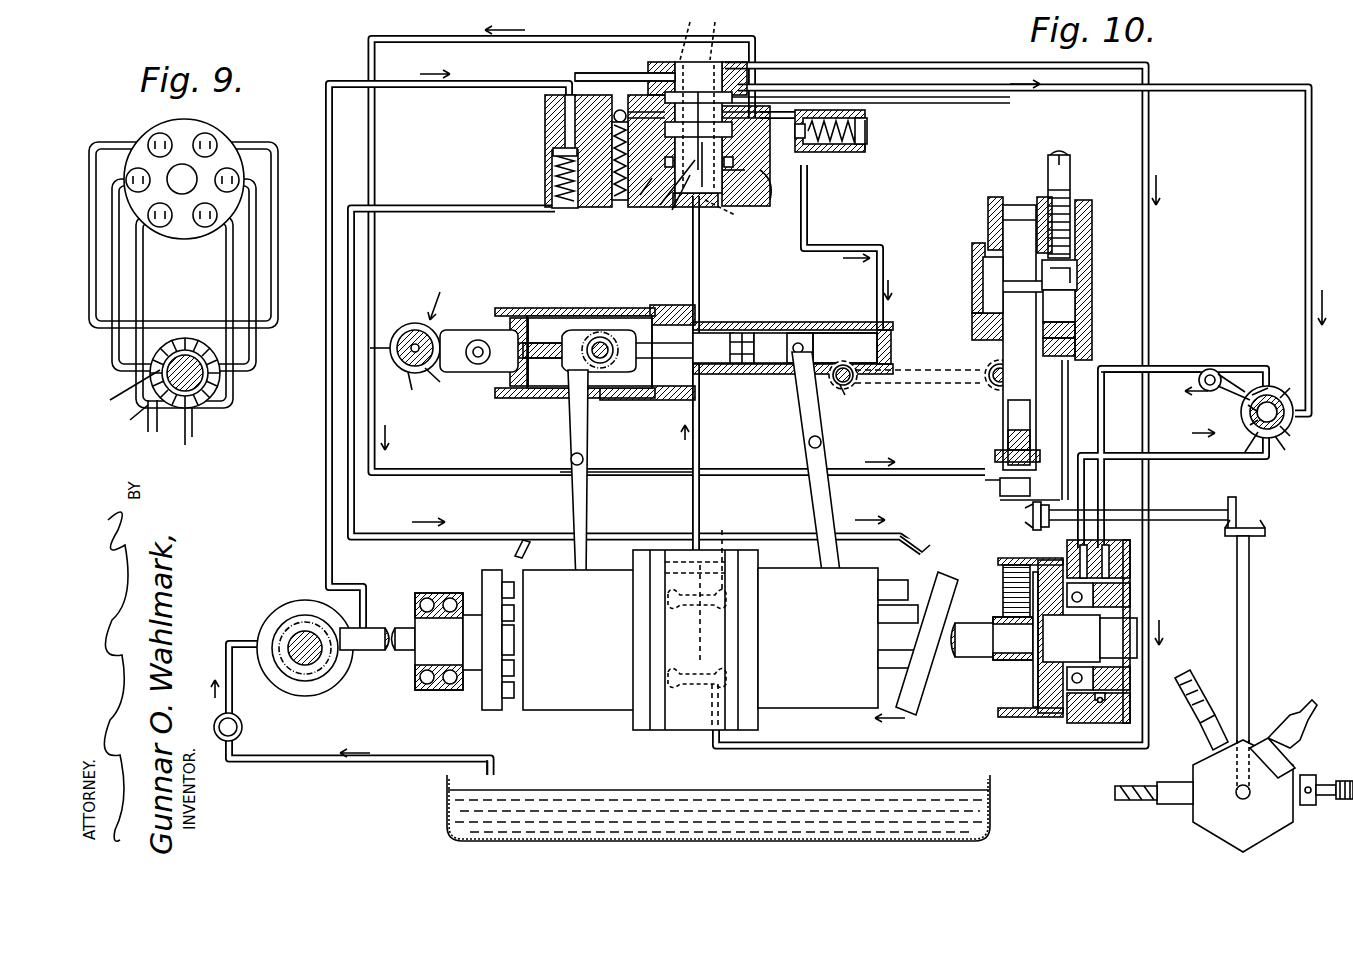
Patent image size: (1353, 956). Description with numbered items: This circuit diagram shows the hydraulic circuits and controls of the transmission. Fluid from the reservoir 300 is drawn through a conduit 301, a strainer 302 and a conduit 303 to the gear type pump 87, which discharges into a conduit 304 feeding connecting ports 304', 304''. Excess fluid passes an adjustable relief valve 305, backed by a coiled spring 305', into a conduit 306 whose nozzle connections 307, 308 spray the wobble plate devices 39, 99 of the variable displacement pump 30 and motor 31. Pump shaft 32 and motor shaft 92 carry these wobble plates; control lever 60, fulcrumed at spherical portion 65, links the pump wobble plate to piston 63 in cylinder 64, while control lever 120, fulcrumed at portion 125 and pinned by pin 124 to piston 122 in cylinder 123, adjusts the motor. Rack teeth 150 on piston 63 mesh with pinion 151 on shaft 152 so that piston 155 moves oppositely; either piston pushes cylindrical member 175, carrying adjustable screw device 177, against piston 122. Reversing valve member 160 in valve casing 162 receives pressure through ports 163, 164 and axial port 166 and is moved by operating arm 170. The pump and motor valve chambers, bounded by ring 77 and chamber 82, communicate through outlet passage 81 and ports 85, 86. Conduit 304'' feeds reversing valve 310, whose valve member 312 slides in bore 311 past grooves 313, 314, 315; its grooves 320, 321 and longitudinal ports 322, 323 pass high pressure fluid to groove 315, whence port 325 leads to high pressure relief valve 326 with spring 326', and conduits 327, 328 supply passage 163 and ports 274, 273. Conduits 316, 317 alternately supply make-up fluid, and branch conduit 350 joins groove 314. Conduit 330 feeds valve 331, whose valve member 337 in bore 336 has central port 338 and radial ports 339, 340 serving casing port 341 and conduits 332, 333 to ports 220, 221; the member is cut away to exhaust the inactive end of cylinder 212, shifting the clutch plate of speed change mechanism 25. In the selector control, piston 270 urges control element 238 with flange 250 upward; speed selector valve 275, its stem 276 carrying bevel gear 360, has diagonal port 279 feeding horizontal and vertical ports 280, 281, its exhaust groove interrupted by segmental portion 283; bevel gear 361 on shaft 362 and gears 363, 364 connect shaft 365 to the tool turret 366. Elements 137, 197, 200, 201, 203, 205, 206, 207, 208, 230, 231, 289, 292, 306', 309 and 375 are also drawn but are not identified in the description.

In FIG. 10, the speed change mechanism 25 is at (1004, 552).
In FIG. 10, the multiple piston variable displacement pump 30 is at (582, 712).
In FIG. 10, the multiple piston variable displacement motor 31 is at (828, 710).
In FIG. 10, the shaft 32 is at (368, 655).
In FIG. 10, the wobble plate device 39 is at (476, 703).
In FIG. 10, the control lever 60 is at (588, 426).
In FIG. 10, the piston 63 is at (575, 390).
In FIG. 10, the cylinder 64 is at (520, 388).
In FIG. 10, the intermediate spherically surfaced portion 65 is at (584, 457).
In FIG. 10, the ring 77 is at (650, 602).
In FIG. 10, the outlet passage 81 is at (717, 547).
In FIG. 9, the cylindrical valve chamber 82 is at (150, 383).
In FIG. 10, the port 85 is at (694, 612).
In FIG. 10, the port 86 is at (709, 687).
In FIG. 10, the auxiliary gear type pump 87 is at (290, 602).
In FIG. 10, the motor shaft 92 is at (968, 660).
In FIG. 10, the wobble plate device 99 is at (914, 680).
In FIG. 10, the control lever 120 is at (800, 408).
In FIG. 10, the piston 122 is at (840, 332).
In FIG. 10, the cylinder 123 is at (828, 322).
In FIG. 10, the pin 124 is at (800, 342).
In FIG. 10, the intermediate spherically surfaced portion 125 is at (822, 442).
In FIG. 10, the valve block 137 is at (735, 610).
In FIG. 10, the rack teeth 150 is at (520, 308).
In FIG. 10, the pinion 151 is at (598, 330).
In FIG. 10, the shaft 152 is at (606, 338).
In FIG. 10, the piston 155 is at (556, 316).
In FIG. 10, the cylindrical valve member 160 is at (416, 322).
In FIG. 10, the valve casing 162 is at (418, 380).
In FIG. 10, the port 163 is at (418, 372).
In FIG. 10, the port 164 is at (398, 330).
In FIG. 10, the axially extending port 166 is at (450, 293).
In FIG. 10, the operating arm 170 is at (476, 338).
In FIG. 10, the cylindrical member 175 is at (710, 333).
In FIG. 10, the adjustable screw device 177 is at (745, 333).
In FIG. 10, the clutch plate 197 is at (1036, 710).
In FIG. 10, the adjusting knob 200 is at (1072, 192).
In FIG. 10, the hub 201 is at (1018, 668).
In FIG. 10, the clutch disc 203 is at (1003, 590).
In FIG. 9, the contact ring 205 is at (232, 170).
In FIG. 10, the contact ring 205 is at (1075, 348).
In FIG. 10, the sleeve 206 is at (1075, 328).
In FIG. 10, the nut 207 is at (1077, 272).
In FIG. 10, the sleeve 208 is at (1075, 300).
In FIG. 10, the cylinder 212 is at (1100, 705).
In FIG. 10, the port 220 is at (1070, 552).
In FIG. 10, the port 221 is at (1113, 556).
In FIG. 10, the ball 230 is at (852, 383).
In FIG. 10, the seat 231 is at (848, 395).
In FIG. 10, the control element 238 is at (1010, 326).
In FIG. 10, the annular flange 250 is at (990, 290).
In FIG. 10, the piston 270 is at (1008, 420).
In FIG. 10, the port 273 is at (1008, 445).
In FIG. 10, the supply port 274 is at (995, 458).
In FIG. 9, the valve 275 is at (178, 340).
In FIG. 10, the valve 275 is at (1000, 492).
In FIG. 10, the stem 276 is at (1060, 500).
In FIG. 9, the diagonally extending port 279 is at (192, 420).
In FIG. 10, the diagonally extending port 279 is at (990, 484).
In FIG. 9, the short horizontal port 280 is at (190, 338).
In FIG. 10, the short horizontal port 280 is at (1068, 470).
In FIG. 9, the vertical port 281 is at (278, 312).
In FIG. 10, the vertical port 281 is at (1063, 440).
In FIG. 9, the segmental portion 283 is at (200, 372).
In FIG. 9, the lead 289 is at (130, 412).
In FIG. 10, the pin 292 is at (1003, 212).
In FIG. 10, the reservoir 300 is at (447, 797).
In FIG. 10, the conduit 301 is at (496, 760).
In FIG. 10, the strainer 302 is at (1262, 390).
In FIG. 10, the conduit 303 is at (233, 700).
In FIG. 10, the conduit 304 is at (423, 340).
In FIG. 10, the connecting port 304' is at (537, 122).
In FIG. 10, the connecting port 304'' is at (609, 69).
In FIG. 10, the adjustable relief valve 305 is at (685, 138).
In FIG. 10, the coiled spring 305' is at (537, 171).
In FIG. 10, the conduit 306 is at (636, 364).
In FIG. 10, the spring 306' is at (608, 153).
In FIG. 10, the nozzle connection 307 is at (498, 550).
In FIG. 10, the nozzle connection 308 is at (618, 108).
In FIG. 10, the pipe 309 is at (810, 212).
In FIG. 10, the reversing valve 310 is at (735, 135).
In FIG. 10, the cylindrical bore 311 is at (668, 180).
In FIG. 10, the cylindrical valve member 312 is at (730, 162).
In FIG. 10, the annular groove 313 is at (672, 88).
In FIG. 10, the groove 314 is at (732, 175).
In FIG. 10, the third annular groove 315 is at (665, 100).
In FIG. 10, the conduit 316 is at (962, 62).
In FIG. 10, the conduit 317 is at (702, 262).
In FIG. 10, the annular groove 320 is at (675, 205).
In FIG. 10, the annular groove 321 is at (778, 96).
In FIG. 10, the longitudinally extending ports 322 is at (733, 210).
In FIG. 10, the longitudinally extending ports 323 is at (699, 33).
In FIG. 10, the port 325 is at (800, 116).
In FIG. 10, the high pressure relief valve 326 is at (842, 146).
In FIG. 10, the coiled spring 326' is at (888, 147).
In FIG. 10, the conduit 327 is at (757, 48).
In FIG. 10, the conduit 328 is at (520, 452).
In FIG. 10, the conduit 330 is at (815, 85).
In FIG. 10, the valve 331 is at (1290, 425).
In FIG. 10, the conduit 332 is at (1160, 455).
In FIG. 10, the conduit 333 is at (1190, 380).
In FIG. 10, the vertical valve bore 336 is at (1294, 420).
In FIG. 10, the cylindrical valve member 337 is at (1250, 410).
In FIG. 10, the central vertical port 338 is at (1252, 425).
In FIG. 10, the radial port 339 is at (1272, 396).
In FIG. 10, the radial port 340 is at (1241, 451).
In FIG. 10, the casing port 341 is at (1298, 453).
In FIG. 10, the branch conduit 350 is at (778, 195).
In FIG. 10, the beveled gear 360 is at (1030, 512).
In FIG. 10, the second beveled gear 361 is at (1040, 525).
In FIG. 10, the shaft 362 is at (1180, 508).
In FIG. 10, the bevel gear 363 is at (1236, 505).
In FIG. 10, the bevel gear 364 is at (1262, 530).
In FIG. 10, the shaft 365 is at (1250, 612).
In FIG. 10, the tool turret 366 is at (1290, 768).
In FIG. 10, the valve lever pivot 375 is at (1220, 372).